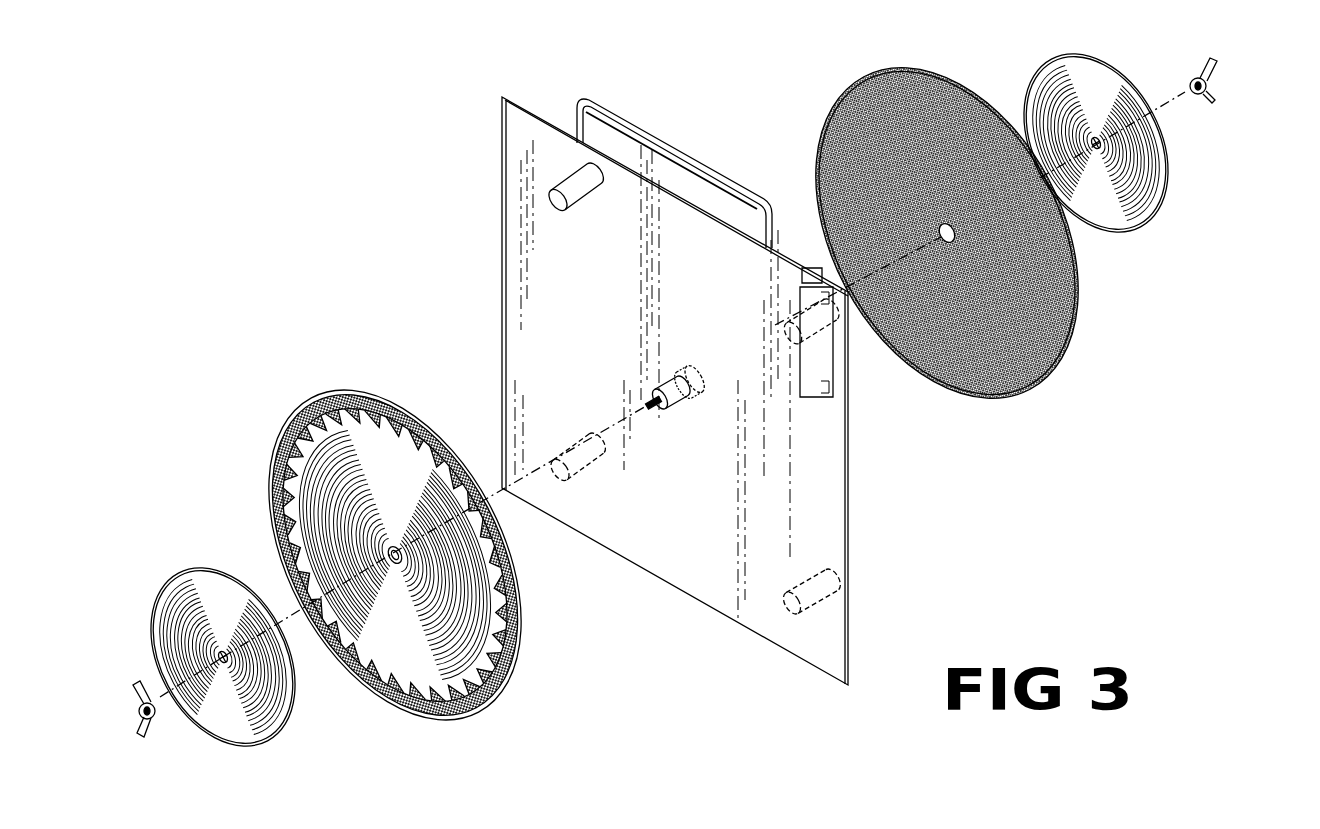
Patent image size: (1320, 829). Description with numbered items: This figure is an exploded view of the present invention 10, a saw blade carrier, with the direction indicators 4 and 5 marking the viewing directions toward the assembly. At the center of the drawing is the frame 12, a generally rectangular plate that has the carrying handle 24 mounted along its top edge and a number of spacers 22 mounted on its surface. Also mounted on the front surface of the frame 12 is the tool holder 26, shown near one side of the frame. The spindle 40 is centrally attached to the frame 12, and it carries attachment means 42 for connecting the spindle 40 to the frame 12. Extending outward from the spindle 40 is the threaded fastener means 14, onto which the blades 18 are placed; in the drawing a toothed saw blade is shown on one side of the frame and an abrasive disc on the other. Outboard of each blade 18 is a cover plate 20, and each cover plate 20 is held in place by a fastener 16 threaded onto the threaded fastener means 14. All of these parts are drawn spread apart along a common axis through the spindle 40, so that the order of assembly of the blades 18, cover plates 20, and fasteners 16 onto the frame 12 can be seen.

The view direction for FIG. 4 is at (387, 306).
The view direction for FIG. 5 is at (738, 92).
The present invention 10 is at (630, 70).
The frame 12 is at (832, 518).
The threaded fastener means 14 is at (651, 412).
The fastener 16 is at (128, 714).
The blades 18 is at (1043, 350).
The cover plate 20 is at (258, 730).
The spacers 22 is at (828, 610).
The carrying handle 24 is at (693, 159).
The tool holder 26 is at (822, 358).
The spindle 40 is at (675, 398).
The attachment means 42 is at (700, 380).